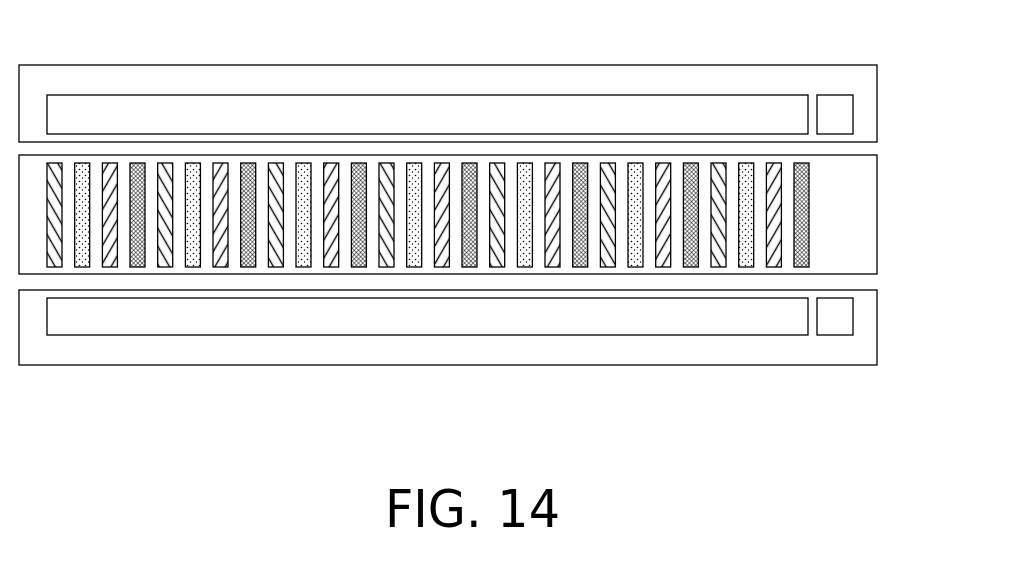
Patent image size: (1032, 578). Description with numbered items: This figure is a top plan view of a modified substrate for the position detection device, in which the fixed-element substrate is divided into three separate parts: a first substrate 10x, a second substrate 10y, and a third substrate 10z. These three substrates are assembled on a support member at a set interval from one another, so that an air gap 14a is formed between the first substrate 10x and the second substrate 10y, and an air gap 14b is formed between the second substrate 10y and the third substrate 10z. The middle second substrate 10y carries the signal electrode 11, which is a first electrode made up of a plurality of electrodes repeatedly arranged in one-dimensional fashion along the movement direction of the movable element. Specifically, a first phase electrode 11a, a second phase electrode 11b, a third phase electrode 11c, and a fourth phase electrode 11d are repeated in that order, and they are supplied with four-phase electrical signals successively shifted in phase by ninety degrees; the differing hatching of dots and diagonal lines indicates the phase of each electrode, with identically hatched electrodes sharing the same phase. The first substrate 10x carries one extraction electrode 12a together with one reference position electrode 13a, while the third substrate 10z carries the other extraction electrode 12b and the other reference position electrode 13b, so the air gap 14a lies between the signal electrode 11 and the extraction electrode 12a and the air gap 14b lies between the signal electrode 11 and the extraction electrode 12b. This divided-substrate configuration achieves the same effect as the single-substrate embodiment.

The first substrate 10x is at (723, 65).
The second substrate 10y is at (877, 210).
The third substrate 10z is at (713, 366).
The signal electrode 11 is at (427, 309).
The first phase electrode 11a is at (54, 267).
The second phase electrode 11b is at (82, 267).
The third phase electrode 11c is at (110, 267).
The fourth phase electrode 11d is at (138, 267).
The extraction electrode 12a is at (79, 95).
The extraction electrode 12b is at (755, 336).
The reference position electrode 13a is at (835, 95).
The reference position electrode 13b is at (833, 336).
The air gap 14a is at (870, 152).
The air gap 14b is at (870, 280).